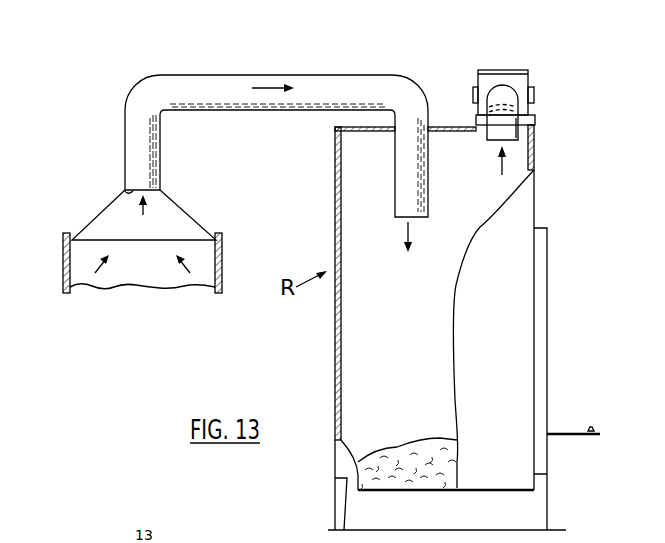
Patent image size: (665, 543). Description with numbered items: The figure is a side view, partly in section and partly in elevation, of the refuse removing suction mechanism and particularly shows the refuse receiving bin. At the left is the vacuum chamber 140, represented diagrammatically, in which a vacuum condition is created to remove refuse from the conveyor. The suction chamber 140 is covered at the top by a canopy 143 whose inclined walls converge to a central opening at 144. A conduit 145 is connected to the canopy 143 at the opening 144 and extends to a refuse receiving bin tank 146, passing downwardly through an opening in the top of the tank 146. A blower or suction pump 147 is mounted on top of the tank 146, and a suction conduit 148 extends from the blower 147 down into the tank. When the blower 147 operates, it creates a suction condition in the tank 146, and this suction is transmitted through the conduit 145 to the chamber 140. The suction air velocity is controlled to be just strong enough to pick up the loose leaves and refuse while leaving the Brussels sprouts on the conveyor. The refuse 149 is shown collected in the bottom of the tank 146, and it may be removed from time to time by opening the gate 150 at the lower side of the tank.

The vacuum chamber 140 is at (66, 285).
The canopy 143 is at (172, 214).
The central opening 144 is at (126, 192).
The conduit 145 is at (218, 80).
The refuse receiving bin tank 146 is at (346, 208).
The blower or suction pump 147 is at (532, 78).
The suction conduit 148 is at (520, 143).
The refuse 149 is at (397, 447).
The gate 150 is at (558, 433).